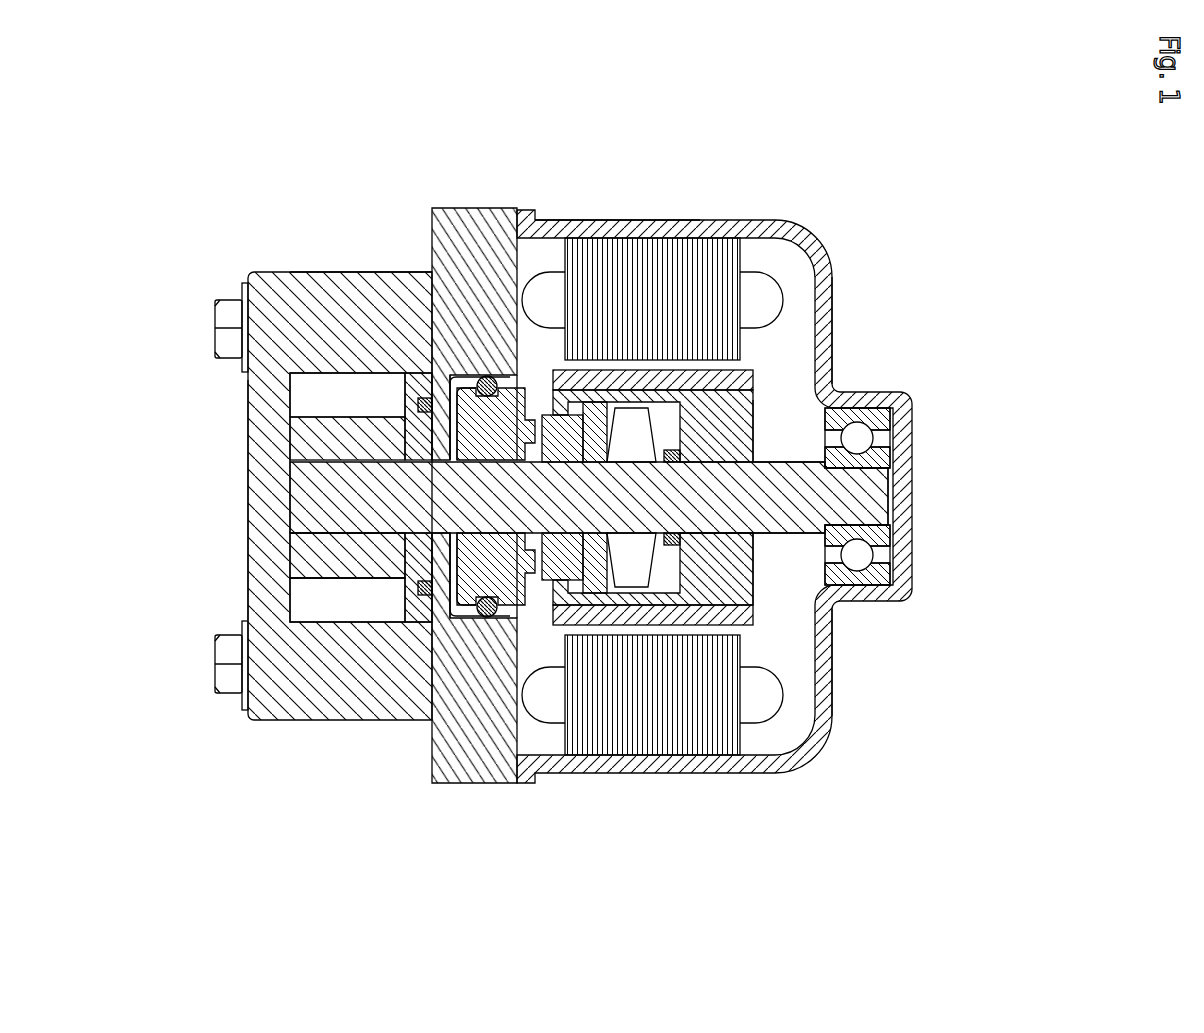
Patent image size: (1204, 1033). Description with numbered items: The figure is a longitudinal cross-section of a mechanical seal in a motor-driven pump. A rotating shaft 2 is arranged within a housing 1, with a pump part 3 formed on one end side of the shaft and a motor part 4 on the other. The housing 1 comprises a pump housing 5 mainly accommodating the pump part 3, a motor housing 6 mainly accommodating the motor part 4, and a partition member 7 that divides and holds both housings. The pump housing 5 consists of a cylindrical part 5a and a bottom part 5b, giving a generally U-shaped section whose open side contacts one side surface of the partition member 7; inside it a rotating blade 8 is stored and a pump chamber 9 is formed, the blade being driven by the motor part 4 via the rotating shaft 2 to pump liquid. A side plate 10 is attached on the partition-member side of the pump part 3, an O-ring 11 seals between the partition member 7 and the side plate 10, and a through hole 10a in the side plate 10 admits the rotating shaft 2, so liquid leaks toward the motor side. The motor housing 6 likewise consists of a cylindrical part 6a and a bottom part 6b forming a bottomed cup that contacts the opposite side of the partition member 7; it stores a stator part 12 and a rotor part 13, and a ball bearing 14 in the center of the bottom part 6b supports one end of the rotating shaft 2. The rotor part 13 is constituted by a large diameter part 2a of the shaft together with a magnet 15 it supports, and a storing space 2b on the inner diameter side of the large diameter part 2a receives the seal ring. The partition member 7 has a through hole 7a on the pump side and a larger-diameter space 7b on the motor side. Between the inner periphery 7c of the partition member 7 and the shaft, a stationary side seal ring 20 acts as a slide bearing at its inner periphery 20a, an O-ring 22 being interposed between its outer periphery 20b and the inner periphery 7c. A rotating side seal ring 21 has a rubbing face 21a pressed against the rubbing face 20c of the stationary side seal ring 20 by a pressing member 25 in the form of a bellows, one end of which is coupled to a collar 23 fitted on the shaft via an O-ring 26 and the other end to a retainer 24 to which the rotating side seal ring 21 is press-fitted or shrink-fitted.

The housing 1 is at (428, 174).
The rotating shaft 2 is at (292, 468).
The large diameter part 2a is at (745, 487).
The storing space 2b is at (766, 474).
The pump part 3 is at (311, 402).
The motor part 4 is at (810, 268).
The pump housing 5 is at (310, 270).
The cylindrical part 5a is at (376, 306).
The bottom part 5b is at (257, 442).
The motor housing 6 is at (700, 222).
The cylindrical part 6a is at (676, 222).
The bottom part 6b is at (826, 300).
The partition member 7 is at (500, 224).
The through hole 7a is at (347, 395).
The space 7b is at (453, 370).
The inner periphery 7c is at (513, 380).
The rotating blade 8 is at (292, 545).
The pump chamber 9 is at (298, 600).
The side plate 10 is at (368, 548).
The through hole 10a is at (347, 600).
The O-ring 11 is at (418, 566).
The stator part 12 is at (730, 270).
The rotor part 13 is at (727, 425).
The ball bearing 14 is at (907, 402).
The magnet 15 is at (768, 388).
The stationary side seal ring 20 is at (548, 422).
The inner periphery 20a is at (455, 535).
The outer periphery 20b is at (480, 583).
The rubbing face 20c is at (575, 572).
The rotating side seal ring 21 is at (668, 450).
The rubbing face 21a is at (668, 547).
The O-ring 22 is at (558, 575).
The collar 23 is at (758, 577).
The retainer 24 is at (660, 565).
The pressing member 25 is at (723, 575).
The O-ring 26 is at (818, 615).